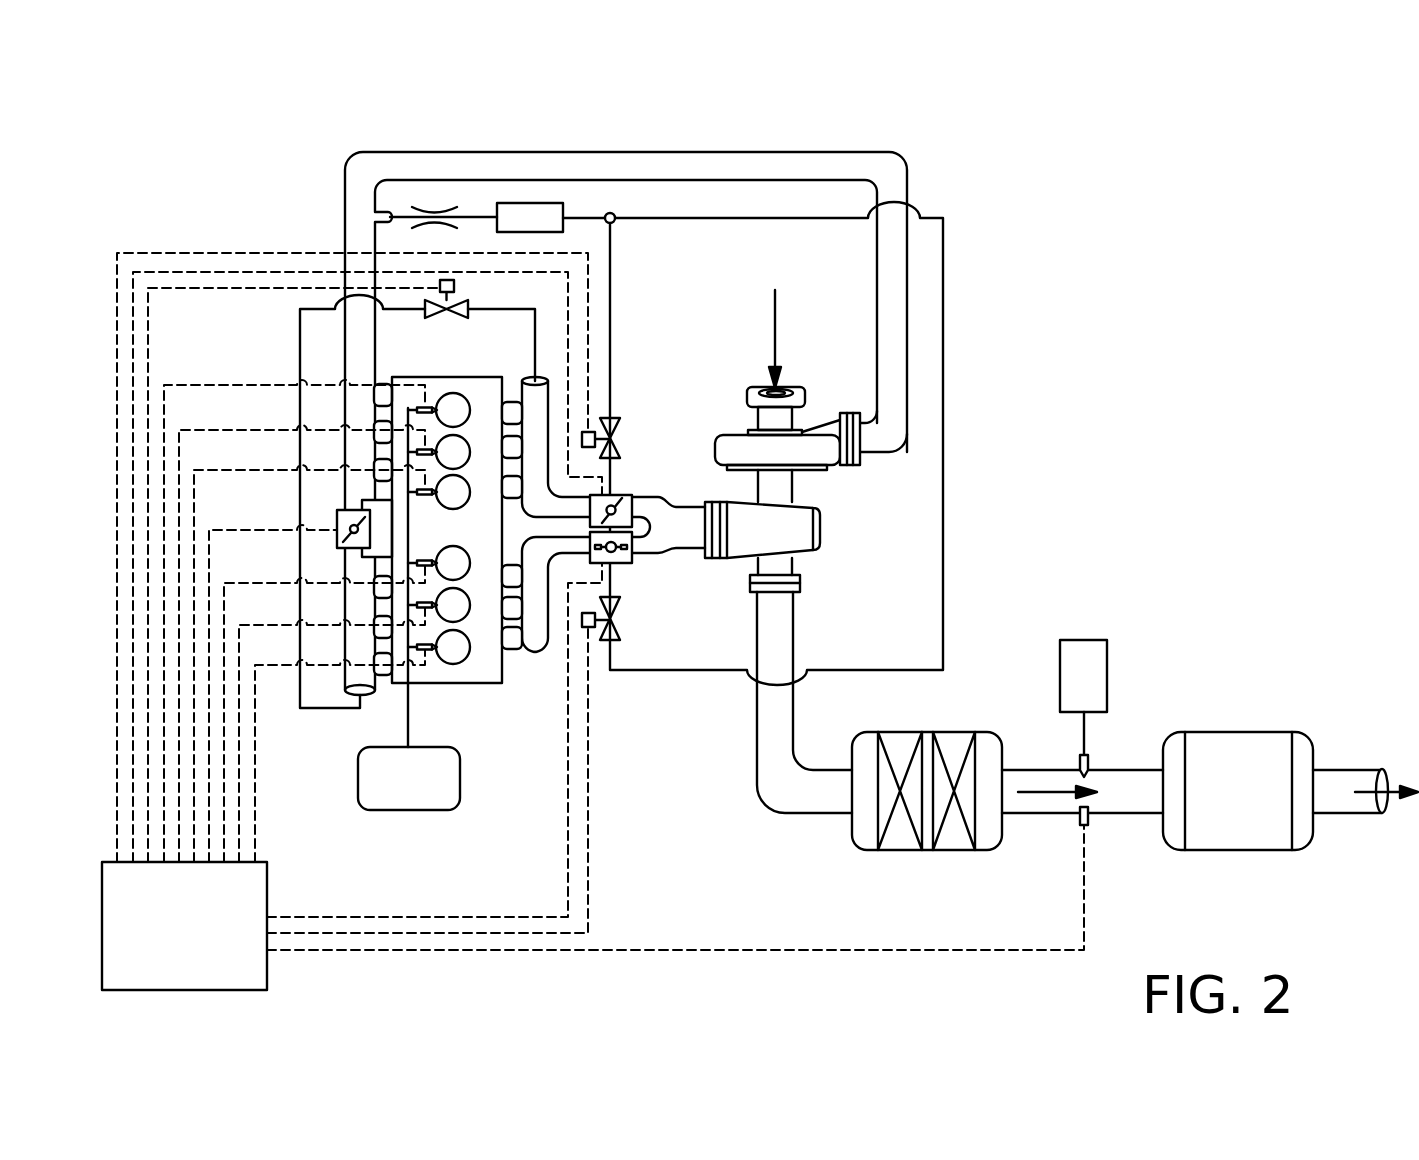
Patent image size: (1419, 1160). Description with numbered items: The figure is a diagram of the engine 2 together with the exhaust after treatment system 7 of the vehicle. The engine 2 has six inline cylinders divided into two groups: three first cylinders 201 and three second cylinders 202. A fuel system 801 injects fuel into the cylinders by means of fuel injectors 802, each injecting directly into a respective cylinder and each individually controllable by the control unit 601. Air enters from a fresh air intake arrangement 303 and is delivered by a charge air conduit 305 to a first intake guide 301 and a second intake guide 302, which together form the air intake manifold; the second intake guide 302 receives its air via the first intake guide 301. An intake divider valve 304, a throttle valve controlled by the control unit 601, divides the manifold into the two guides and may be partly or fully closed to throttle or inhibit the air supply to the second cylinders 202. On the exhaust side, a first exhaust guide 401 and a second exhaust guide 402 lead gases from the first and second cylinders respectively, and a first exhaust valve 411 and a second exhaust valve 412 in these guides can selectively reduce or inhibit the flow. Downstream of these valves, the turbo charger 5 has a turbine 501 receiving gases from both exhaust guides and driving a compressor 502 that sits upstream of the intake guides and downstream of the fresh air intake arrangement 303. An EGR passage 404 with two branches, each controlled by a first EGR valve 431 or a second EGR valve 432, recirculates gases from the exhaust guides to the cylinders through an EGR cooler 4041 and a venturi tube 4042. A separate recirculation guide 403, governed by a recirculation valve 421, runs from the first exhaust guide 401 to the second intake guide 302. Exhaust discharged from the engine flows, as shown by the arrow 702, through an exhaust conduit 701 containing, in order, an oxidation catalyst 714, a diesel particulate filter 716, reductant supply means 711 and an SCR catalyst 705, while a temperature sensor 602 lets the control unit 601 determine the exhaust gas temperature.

The engine 2 is at (643, 813).
The turbo charger 5 is at (822, 545).
The exhaust after treatment system 7 is at (1218, 588).
The first cylinders 201 is at (470, 492).
The second cylinders 202 is at (462, 662).
The first intake guide 301 is at (357, 377).
The second intake guide 302 is at (357, 573).
The fresh air intake arrangement 303 is at (787, 387).
The intake divider valve 304 is at (337, 517).
The charge air pipe 305 is at (708, 152).
The first exhaust guide 401 is at (627, 495).
The second exhaust guide 402 is at (622, 563).
The recirculation guide 403 is at (298, 337).
The EGR passage 404 is at (583, 218).
The first exhaust valve 411 is at (618, 507).
The second exhaust valve 412 is at (627, 548).
The recirculation valve 421 is at (452, 318).
The first EGR valve 431 is at (617, 438).
The second EGR valve 432 is at (617, 620).
The turbine 501 is at (822, 515).
The compressor 502 is at (832, 470).
The control unit 601 is at (205, 941).
The temperature sensor 602 is at (1087, 825).
The exhaust conduit 701 is at (1025, 768).
The arrow 702 is at (1033, 797).
The selective catalytic reduction catalyst 705 is at (1237, 732).
The reductant supply means 711 is at (1087, 640).
The oxidation catalyst 714 is at (895, 852).
The diesel particulate filter 716 is at (957, 852).
The fuel system 801 is at (429, 791).
The fuel injectors 802 is at (430, 610).
The EGR cooler 4041 is at (523, 203).
The venturi tube 4042 is at (427, 208).